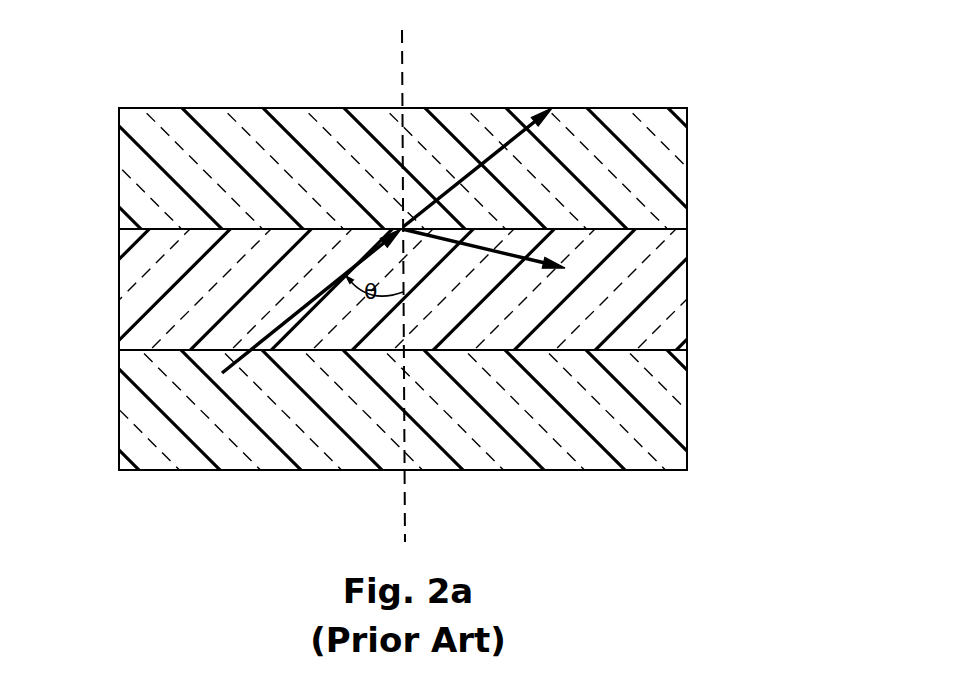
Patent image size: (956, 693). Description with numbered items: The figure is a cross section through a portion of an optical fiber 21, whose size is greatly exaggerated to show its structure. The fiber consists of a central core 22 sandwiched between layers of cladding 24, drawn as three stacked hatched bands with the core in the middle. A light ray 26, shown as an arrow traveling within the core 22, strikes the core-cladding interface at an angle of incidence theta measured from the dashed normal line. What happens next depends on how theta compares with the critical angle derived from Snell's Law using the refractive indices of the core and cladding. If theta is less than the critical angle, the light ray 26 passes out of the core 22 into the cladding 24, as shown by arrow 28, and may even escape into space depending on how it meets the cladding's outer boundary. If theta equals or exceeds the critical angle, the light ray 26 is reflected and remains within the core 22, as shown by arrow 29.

The optical fiber 21 is at (782, 164).
The core 22 is at (173, 282).
The cladding 24 is at (152, 170).
The light ray 26 is at (228, 365).
The light ray passing into cladding 28 is at (505, 143).
The light ray remaining in core 29 is at (507, 247).